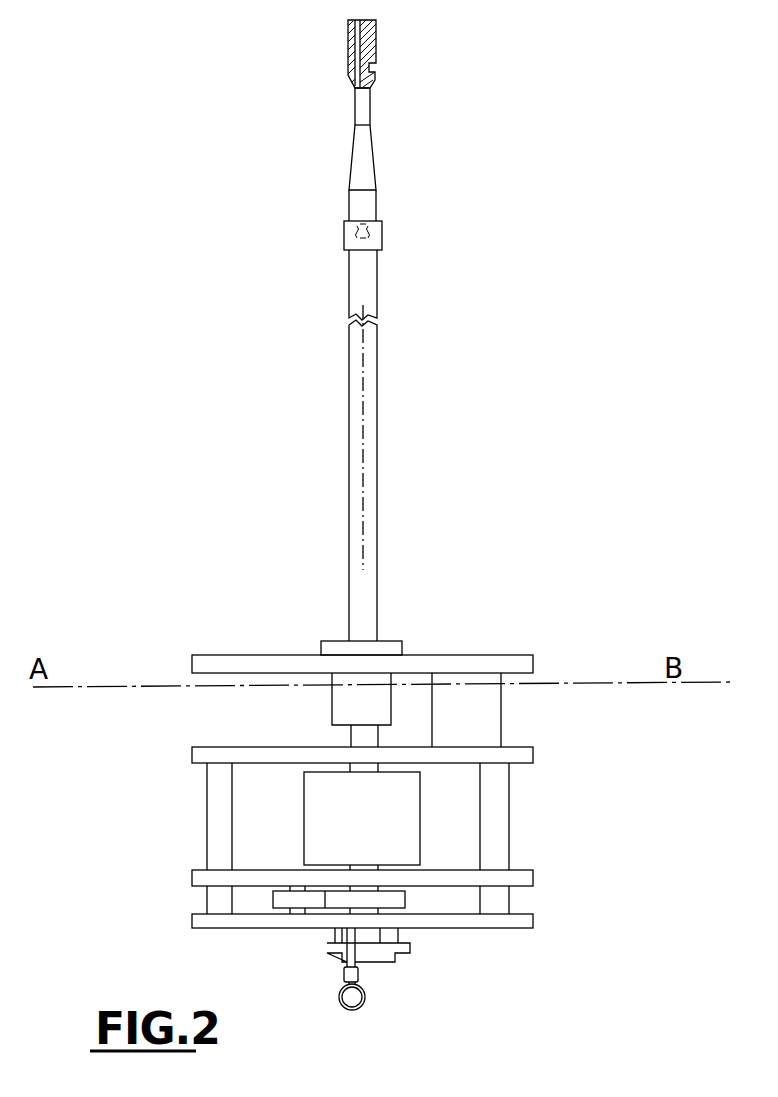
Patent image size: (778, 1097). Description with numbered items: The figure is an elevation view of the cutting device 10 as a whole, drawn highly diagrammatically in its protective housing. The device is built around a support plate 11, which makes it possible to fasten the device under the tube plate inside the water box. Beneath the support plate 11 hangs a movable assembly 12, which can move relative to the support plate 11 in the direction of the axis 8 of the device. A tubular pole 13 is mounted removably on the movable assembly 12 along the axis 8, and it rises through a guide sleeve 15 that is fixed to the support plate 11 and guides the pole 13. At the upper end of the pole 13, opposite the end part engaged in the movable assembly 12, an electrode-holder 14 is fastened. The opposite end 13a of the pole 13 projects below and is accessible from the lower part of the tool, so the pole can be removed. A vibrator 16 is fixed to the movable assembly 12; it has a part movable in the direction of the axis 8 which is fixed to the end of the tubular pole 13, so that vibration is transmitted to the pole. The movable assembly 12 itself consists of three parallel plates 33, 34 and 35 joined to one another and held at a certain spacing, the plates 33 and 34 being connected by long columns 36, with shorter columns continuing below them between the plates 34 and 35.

The axis 8 is at (363, 466).
The device 10 is at (393, 333).
The support plate 11 is at (519, 658).
The movable assembly 12 is at (504, 835).
The tubular pole 13 is at (378, 405).
The end of the pole 13a is at (338, 968).
The electrode-holder 14 is at (376, 42).
The guide sleeve 15 is at (392, 647).
The vibrator 16 is at (336, 826).
The plate 33 is at (207, 754).
The plate 34 is at (200, 876).
The plate 35 is at (200, 917).
The long columns 36 is at (226, 814).